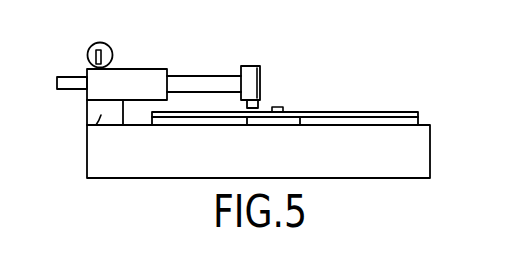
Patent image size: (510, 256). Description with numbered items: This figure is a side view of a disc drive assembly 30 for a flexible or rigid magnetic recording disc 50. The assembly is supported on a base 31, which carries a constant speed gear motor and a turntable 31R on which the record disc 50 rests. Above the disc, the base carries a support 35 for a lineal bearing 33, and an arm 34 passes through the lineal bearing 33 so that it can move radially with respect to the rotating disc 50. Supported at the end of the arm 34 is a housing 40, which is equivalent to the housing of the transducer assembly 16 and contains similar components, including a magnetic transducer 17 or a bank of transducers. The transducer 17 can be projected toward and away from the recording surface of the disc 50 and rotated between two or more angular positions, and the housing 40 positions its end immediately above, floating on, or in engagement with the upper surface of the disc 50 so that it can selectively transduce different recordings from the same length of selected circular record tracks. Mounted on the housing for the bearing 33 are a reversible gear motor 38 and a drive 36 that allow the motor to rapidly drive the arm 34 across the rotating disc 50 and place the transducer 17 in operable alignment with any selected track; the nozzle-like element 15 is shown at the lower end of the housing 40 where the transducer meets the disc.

The nozzle 15 is at (262, 105).
The transducer assembly 16 is at (242, 66).
The magnetic transducer 17 is at (262, 108).
The disc drive assembly 30 is at (76, 186).
The base 31 is at (423, 126).
The turntable 31R is at (302, 116).
The lineal bearing 33 is at (90, 100).
The arm 34 is at (191, 75).
The support 35 is at (87, 127).
The drive 36 is at (111, 47).
The reversible gear motor 38 is at (101, 43).
The housing 40 is at (260, 67).
The magnetic recording disc 50 is at (358, 113).